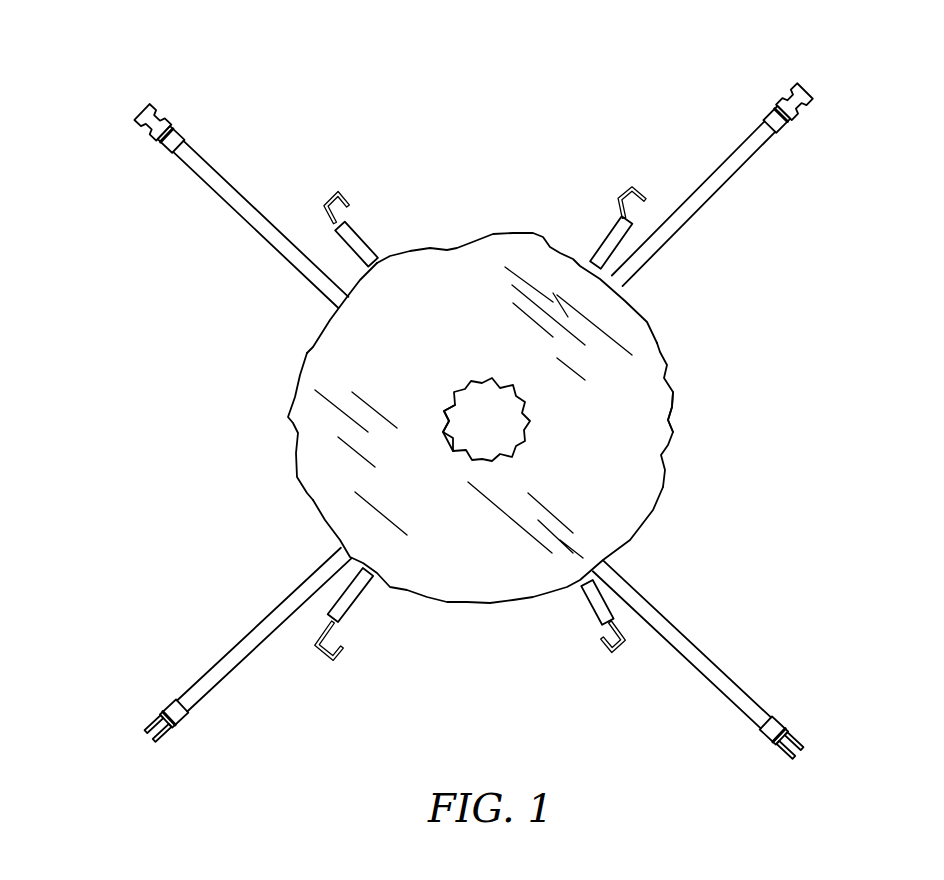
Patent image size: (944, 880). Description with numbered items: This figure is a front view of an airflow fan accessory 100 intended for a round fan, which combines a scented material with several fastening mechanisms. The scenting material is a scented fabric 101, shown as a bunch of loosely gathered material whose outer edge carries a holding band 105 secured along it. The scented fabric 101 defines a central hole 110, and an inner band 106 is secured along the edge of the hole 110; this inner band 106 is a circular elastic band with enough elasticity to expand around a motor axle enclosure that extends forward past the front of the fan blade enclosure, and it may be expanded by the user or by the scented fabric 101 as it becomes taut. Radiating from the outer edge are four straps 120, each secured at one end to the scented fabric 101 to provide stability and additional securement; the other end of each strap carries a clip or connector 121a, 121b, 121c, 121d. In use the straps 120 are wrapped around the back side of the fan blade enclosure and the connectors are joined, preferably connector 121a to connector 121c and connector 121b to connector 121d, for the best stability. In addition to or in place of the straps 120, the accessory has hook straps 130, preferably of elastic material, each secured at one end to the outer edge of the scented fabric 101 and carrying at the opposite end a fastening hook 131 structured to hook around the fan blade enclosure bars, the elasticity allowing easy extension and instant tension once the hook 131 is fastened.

The airflow fan accessory 100 is at (692, 410).
The scented fabric 101 is at (600, 472).
The holding band 105 is at (658, 345).
The inner band 106 is at (465, 422).
The hole 110 is at (487, 378).
The straps 120 is at (260, 203).
The connector 121a is at (812, 93).
The connector 121b is at (140, 110).
The connector 121c is at (153, 728).
The connector 121d is at (797, 732).
The hook straps 130 is at (367, 243).
The fastening hooks 131 is at (349, 194).